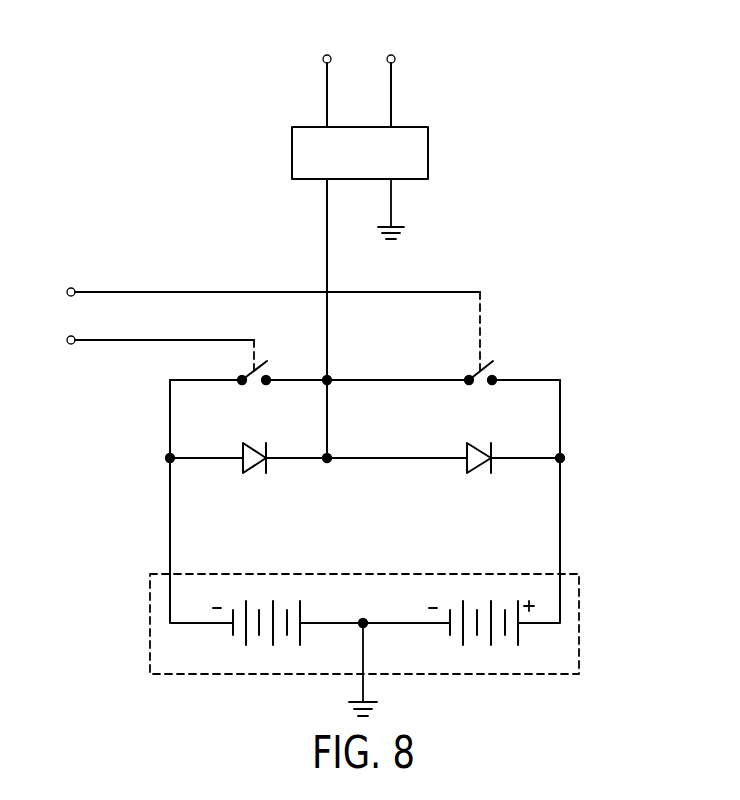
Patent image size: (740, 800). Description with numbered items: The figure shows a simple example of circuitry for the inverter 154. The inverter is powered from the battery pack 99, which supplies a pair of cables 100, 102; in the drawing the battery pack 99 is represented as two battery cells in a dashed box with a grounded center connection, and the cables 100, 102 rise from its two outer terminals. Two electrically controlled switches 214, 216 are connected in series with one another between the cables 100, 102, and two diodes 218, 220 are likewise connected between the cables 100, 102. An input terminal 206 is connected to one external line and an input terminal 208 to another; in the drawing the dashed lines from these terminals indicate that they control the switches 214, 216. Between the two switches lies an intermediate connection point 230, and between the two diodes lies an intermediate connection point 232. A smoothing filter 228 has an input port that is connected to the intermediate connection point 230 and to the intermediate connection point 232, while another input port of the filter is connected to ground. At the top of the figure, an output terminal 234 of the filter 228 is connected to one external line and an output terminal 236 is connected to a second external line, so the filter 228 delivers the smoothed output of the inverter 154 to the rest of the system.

The inverter 154 is at (568, 145).
The smoothing filter 228 is at (292, 156).
The output terminal 234 is at (326, 55).
The output terminal 236 is at (390, 55).
The input terminal 206 is at (70, 288).
The input terminal 208 is at (72, 345).
The electrically controlled switch 214 is at (282, 361).
The electrically controlled switch 216 is at (504, 360).
The intermediate connection point 230 is at (330, 376).
The intermediate connection point 232 is at (330, 455).
The diode 218 is at (249, 444).
The diode 220 is at (476, 444).
The cable 100 is at (170, 542).
The cable 102 is at (560, 543).
The battery pack 99 is at (376, 573).